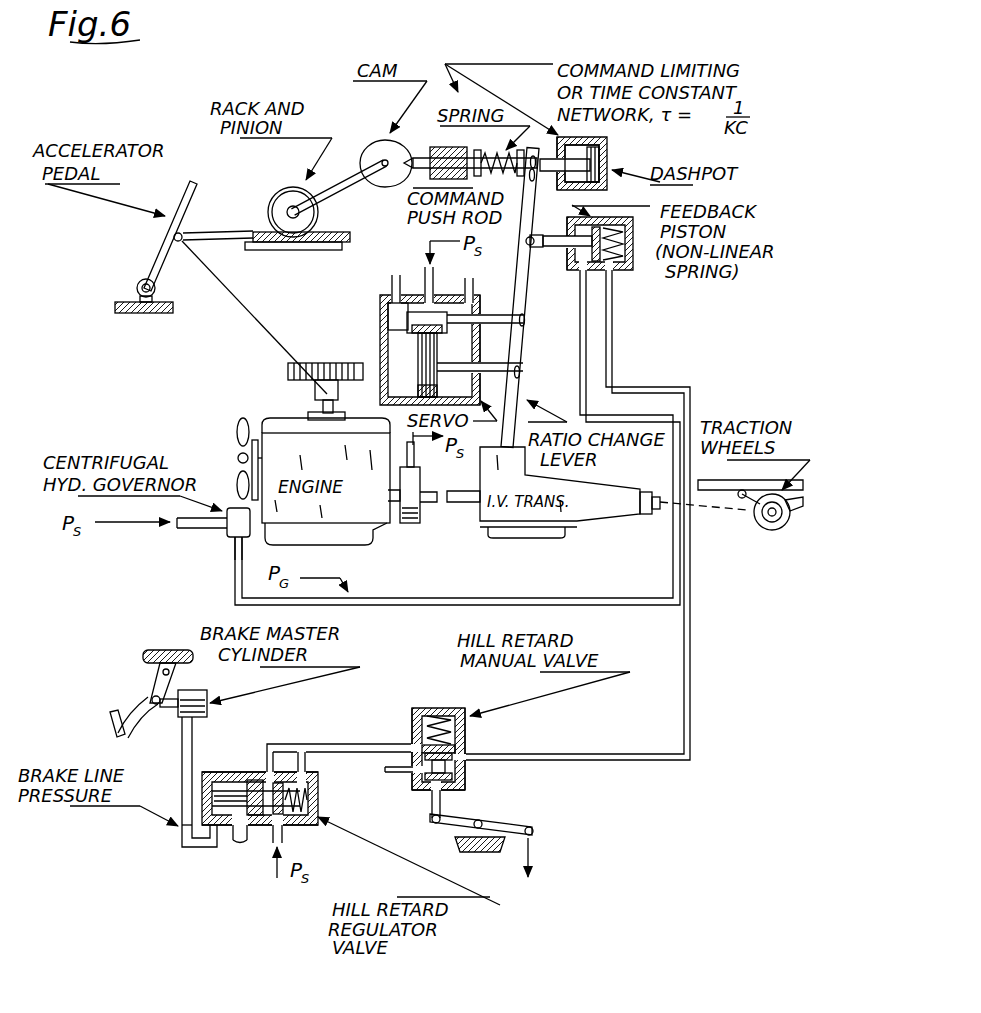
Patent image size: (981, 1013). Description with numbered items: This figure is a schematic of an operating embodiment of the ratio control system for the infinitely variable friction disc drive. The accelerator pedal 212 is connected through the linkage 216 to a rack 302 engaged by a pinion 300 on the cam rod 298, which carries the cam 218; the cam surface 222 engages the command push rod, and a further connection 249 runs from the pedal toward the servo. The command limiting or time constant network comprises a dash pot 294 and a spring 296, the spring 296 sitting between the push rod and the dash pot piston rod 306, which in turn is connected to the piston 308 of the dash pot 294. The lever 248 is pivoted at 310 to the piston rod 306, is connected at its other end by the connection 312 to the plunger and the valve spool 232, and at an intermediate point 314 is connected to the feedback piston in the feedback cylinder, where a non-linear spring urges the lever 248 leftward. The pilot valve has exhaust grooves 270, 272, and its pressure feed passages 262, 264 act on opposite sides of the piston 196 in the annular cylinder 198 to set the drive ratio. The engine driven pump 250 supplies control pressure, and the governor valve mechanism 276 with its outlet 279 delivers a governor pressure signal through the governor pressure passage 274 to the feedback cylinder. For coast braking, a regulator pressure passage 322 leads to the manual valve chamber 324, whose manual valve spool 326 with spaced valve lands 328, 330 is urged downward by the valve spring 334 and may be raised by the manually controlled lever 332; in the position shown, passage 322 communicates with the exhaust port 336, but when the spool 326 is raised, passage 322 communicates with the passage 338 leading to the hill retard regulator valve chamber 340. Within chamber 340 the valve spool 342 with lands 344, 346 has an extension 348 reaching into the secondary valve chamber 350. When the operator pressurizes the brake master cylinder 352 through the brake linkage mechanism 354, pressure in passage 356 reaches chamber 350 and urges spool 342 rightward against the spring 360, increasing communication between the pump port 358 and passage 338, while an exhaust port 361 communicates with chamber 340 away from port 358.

The piston 196 is at (420, 377).
The annular cylinder 198 is at (384, 341).
The accelerator pedal 212 is at (172, 235).
The linkage 216 is at (226, 221).
The cam 218 is at (352, 188).
The cam surface 222 is at (405, 135).
The multiple land valve spool 232 is at (423, 296).
The linkage lever 248 is at (528, 298).
The pedal to servo link 249 is at (256, 318).
The engine driven pump 250 is at (413, 523).
The pressure feed passage 262 is at (456, 336).
The pressure feed passage 264 is at (390, 319).
The exhaust groove 270 is at (392, 285).
The exhaust groove 272 is at (478, 276).
The governor pressure passage 274 is at (623, 601).
The governor valve mechanism 276 is at (227, 534).
The governor outlet 279 is at (259, 551).
The dash pot 294 is at (607, 160).
The spring 296 is at (492, 152).
The cam rod 298 is at (305, 186).
The pinion 300 is at (294, 243).
The rack 302 is at (256, 250).
The dash pot piston rod 306 is at (592, 146).
The piston 308 is at (606, 147).
The pivot 310 is at (535, 145).
The connection 312 is at (527, 322).
The intermediate point 314 is at (542, 250).
The regulator pressure passage 322 is at (692, 586).
The manual valve chamber 324 is at (463, 709).
The manual valve spool 326 is at (466, 770).
The valve land 328 is at (466, 750).
The valve land 330 is at (463, 781).
The manually controlled lever 332 is at (518, 825).
The valve spring 334 is at (447, 714).
The exhaust port 336 is at (400, 775).
The passage 338 is at (362, 746).
The hill retard regulator valve chamber 340 is at (250, 780).
The valve spool 342 is at (276, 783).
The valve land 344 is at (256, 832).
The valve land 346 is at (283, 790).
The extension 348 is at (233, 832).
The secondary valve chamber 350 is at (190, 826).
The brake master cylinder 352 is at (207, 712).
The brake linkage mechanism 354 is at (140, 712).
The passage 356 is at (182, 742).
The port 358 is at (298, 828).
The spring 360 is at (315, 797).
The exhaust port 361 is at (238, 845).